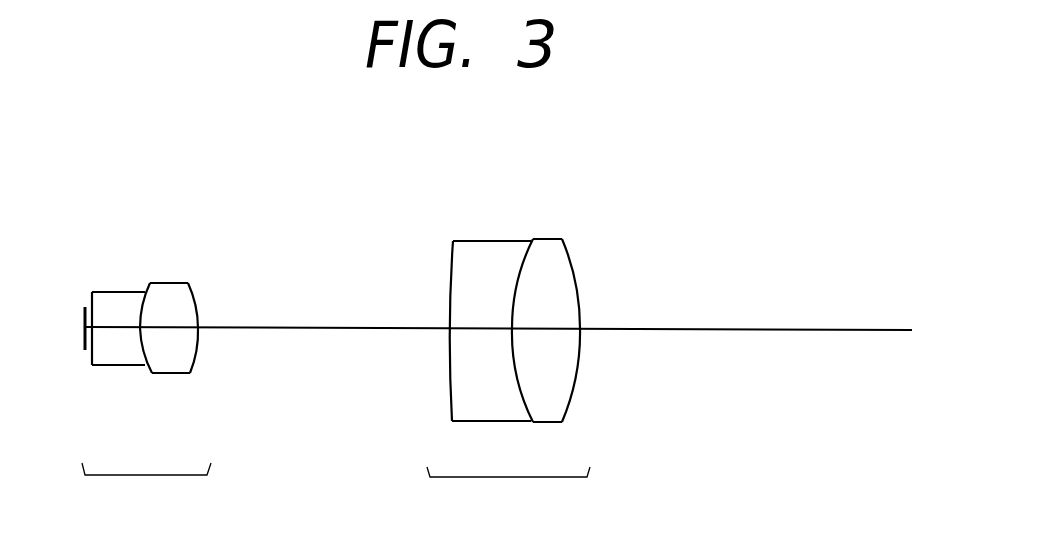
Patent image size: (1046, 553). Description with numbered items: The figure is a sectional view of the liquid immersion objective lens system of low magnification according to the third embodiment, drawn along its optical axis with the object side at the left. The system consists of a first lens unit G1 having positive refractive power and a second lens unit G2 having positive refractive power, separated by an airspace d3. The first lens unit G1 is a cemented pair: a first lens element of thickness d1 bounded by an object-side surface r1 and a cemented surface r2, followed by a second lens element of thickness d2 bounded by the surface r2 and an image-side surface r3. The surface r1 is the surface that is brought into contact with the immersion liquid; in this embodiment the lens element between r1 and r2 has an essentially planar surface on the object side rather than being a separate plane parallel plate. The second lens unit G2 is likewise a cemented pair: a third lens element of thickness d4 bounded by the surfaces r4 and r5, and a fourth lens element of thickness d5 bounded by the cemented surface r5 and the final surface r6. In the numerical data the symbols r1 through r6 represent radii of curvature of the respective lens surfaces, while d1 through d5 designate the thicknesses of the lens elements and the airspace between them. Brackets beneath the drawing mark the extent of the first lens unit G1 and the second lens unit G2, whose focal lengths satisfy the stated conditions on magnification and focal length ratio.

The first lens surface r1 is at (90, 304).
The second lens surface r2 is at (141, 305).
The third lens surface r3 is at (198, 305).
The fourth lens surface r4 is at (449, 277).
The fifth lens surface r5 is at (521, 271).
The sixth lens surface r6 is at (575, 275).
The thickness of first lens element d1 is at (117, 330).
The thickness of second lens element d2 is at (175, 330).
The airspace between lens units d3 is at (307, 330).
The thickness of third lens element d4 is at (478, 330).
The thickness of fourth lens element d5 is at (555, 330).
The first lens unit G1 is at (146, 487).
The second lens unit G2 is at (508, 489).